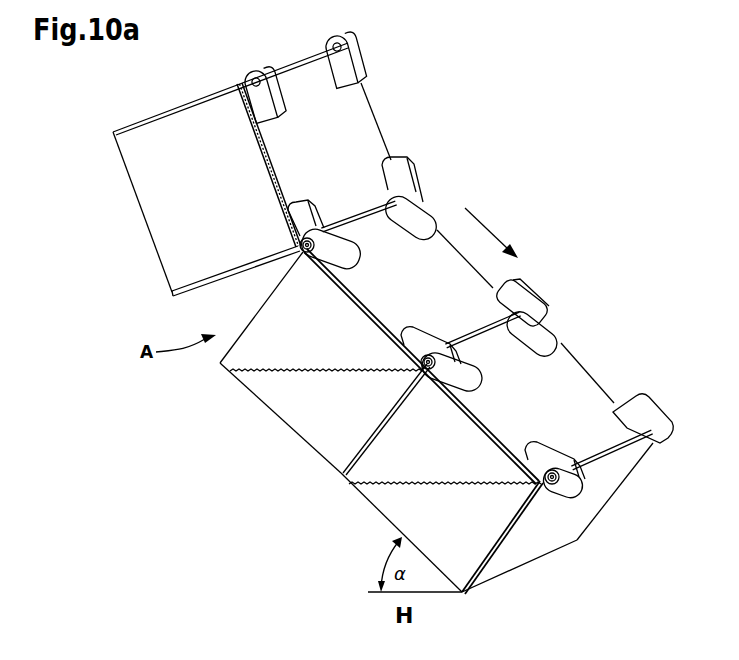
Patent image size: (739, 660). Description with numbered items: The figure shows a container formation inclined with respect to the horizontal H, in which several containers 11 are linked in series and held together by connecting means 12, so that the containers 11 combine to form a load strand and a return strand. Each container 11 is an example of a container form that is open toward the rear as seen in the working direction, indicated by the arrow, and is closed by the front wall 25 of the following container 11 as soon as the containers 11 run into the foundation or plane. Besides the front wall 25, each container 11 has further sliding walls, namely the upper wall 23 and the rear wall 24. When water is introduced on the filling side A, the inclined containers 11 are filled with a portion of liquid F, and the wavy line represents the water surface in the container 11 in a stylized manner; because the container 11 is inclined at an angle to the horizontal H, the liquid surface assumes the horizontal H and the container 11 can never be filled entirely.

The container 11 is at (292, 414).
The connecting means 12 is at (546, 326).
The upper wall 23 is at (581, 386).
The rear wall 24 is at (355, 459).
The front wall 25 is at (481, 567).